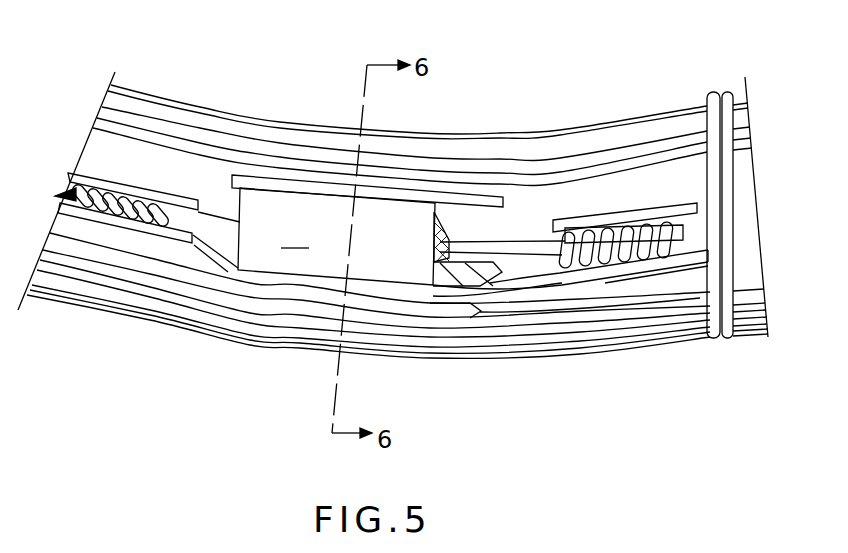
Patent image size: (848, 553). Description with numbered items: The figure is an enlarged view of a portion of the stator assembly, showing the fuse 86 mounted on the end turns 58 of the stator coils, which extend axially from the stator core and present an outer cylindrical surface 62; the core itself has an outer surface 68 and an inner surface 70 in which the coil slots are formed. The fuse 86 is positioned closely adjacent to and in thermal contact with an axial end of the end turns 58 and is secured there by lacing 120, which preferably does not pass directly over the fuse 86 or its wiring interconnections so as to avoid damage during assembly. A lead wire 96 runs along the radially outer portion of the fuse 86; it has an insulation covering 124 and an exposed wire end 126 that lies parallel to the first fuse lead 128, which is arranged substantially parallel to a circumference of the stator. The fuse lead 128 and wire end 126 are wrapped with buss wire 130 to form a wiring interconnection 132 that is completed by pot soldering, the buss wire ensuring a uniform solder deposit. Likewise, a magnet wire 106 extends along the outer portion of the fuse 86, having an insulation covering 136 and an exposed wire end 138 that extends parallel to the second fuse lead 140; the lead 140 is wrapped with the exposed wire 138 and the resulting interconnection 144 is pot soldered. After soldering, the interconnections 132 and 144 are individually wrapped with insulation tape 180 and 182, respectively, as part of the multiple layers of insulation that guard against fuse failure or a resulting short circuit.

The end turns 58 is at (659, 300).
The outer cylindrical surface 62 is at (752, 330).
The outer surface 68 is at (480, 360).
The inner surface 70 is at (497, 131).
The fuse 86 is at (367, 230).
The lead wire 96 is at (133, 268).
The magnet wire 106 is at (238, 273).
The lacing 120 is at (712, 340).
The insulation covering 124 is at (400, 305).
The exposed wire end 126 is at (523, 277).
The first fuse lead 128 is at (528, 247).
The buss wire 130 is at (622, 233).
The wiring interconnection 132 is at (683, 228).
The insulation covering 136 is at (315, 285).
The exposed wire end 138 is at (143, 200).
The second fuse lead 140 is at (208, 218).
The interconnection 144 is at (88, 182).
The insulation tape 180 is at (705, 260).
The insulation tape 182 is at (55, 240).